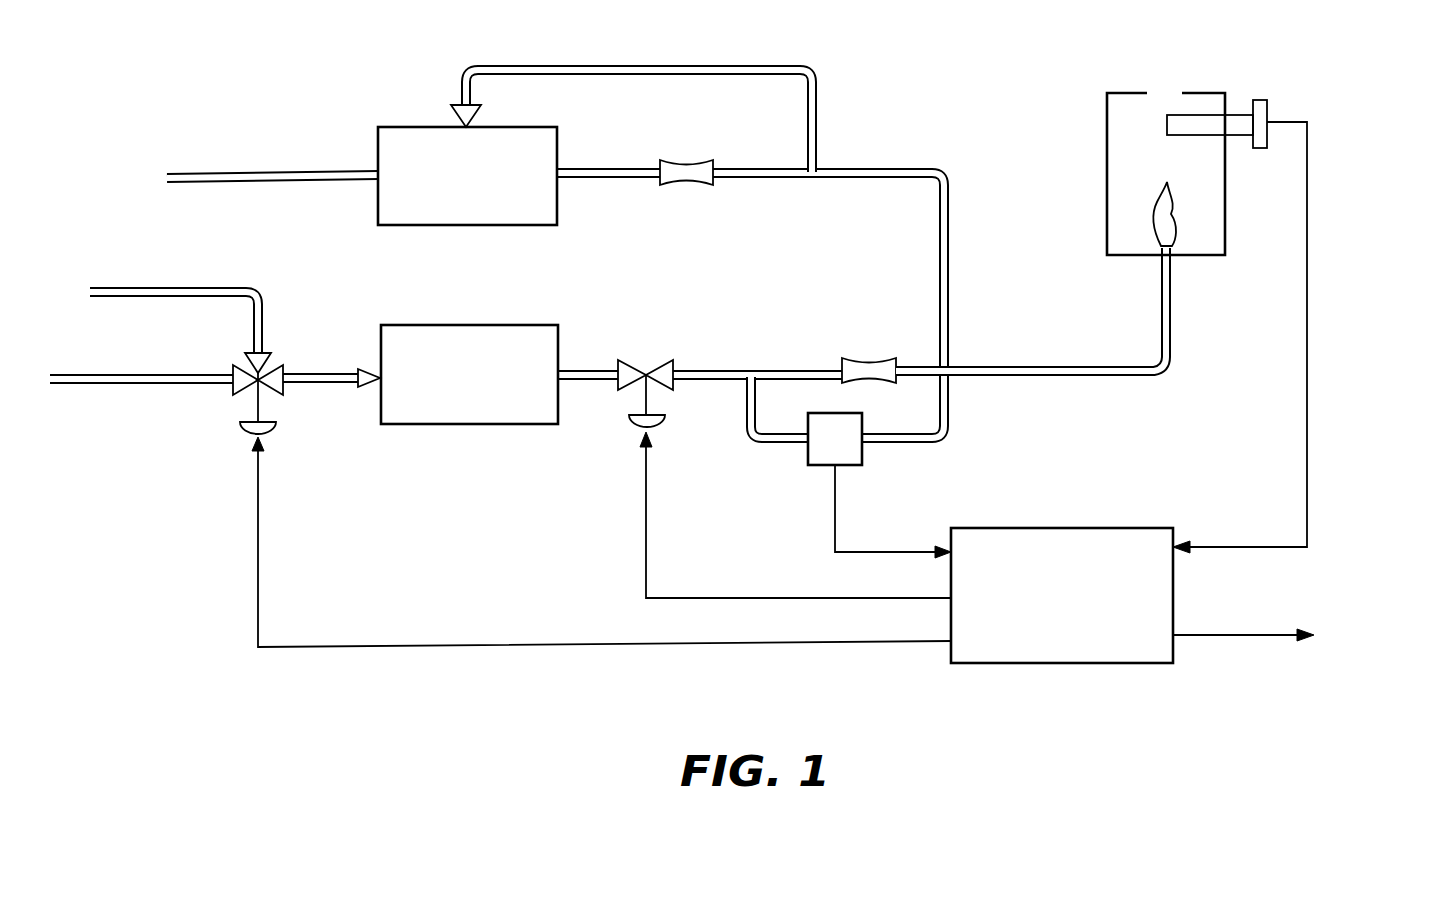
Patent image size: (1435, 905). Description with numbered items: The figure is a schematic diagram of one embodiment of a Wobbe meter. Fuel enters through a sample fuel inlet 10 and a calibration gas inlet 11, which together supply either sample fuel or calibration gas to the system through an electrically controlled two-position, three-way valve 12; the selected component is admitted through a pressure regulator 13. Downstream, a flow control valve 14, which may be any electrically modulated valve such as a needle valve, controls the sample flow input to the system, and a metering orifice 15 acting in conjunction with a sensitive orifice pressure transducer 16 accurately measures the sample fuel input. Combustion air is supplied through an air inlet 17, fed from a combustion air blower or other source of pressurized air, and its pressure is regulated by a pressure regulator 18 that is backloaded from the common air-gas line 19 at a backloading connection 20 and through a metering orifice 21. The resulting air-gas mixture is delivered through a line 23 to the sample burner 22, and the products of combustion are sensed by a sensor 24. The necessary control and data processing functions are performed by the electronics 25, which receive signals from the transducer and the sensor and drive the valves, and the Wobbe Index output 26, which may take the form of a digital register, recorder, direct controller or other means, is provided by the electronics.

The sample fuel inlet 10 is at (232, 290).
The calibration gas inlet 11 is at (222, 386).
The two-position, three-way valve 12 is at (276, 392).
The pressure regulator 13 is at (470, 424).
The flow control valve 14 is at (628, 385).
The metering orifice 15 is at (855, 366).
The orifice pressure transducer 16 is at (849, 460).
The air inlet 17 is at (323, 176).
The pressure regulator 18 is at (485, 225).
The common air-gas line 19 is at (949, 247).
The backloading connection 20 is at (591, 66).
The metering orifice 21 is at (683, 170).
The sample burner 22 is at (1113, 154).
The line 23 is at (1062, 370).
The sensor 24 is at (1232, 128).
The electronics 25 is at (1048, 663).
The Wobbe Index output 26 is at (1270, 637).